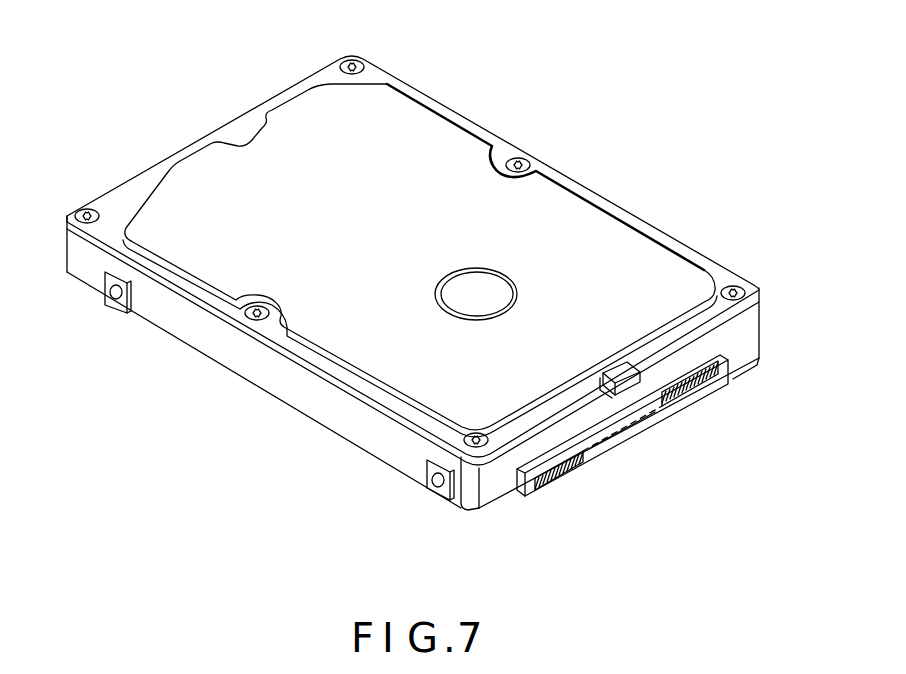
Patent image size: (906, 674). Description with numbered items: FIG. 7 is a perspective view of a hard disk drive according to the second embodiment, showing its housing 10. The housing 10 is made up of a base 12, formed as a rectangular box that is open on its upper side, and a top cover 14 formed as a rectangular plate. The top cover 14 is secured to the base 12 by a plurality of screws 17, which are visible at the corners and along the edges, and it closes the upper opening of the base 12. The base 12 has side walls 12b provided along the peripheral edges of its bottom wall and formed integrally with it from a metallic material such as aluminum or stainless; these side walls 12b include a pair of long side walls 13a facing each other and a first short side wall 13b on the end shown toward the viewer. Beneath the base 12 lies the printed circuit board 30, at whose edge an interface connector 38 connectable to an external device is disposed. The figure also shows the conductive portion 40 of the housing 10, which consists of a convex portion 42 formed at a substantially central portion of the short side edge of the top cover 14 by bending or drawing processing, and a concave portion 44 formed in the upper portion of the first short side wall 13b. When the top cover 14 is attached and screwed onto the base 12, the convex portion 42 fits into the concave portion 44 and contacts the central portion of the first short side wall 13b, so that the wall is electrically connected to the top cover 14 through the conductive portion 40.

The housing 10 is at (437, 88).
The base 12 is at (275, 371).
The side walls 12b is at (180, 315).
The long side walls 13a is at (355, 427).
The first short side wall 13b is at (532, 447).
The top cover 14 is at (582, 225).
The screws 17 is at (350, 56).
The printed circuit board 30 is at (753, 365).
The interface connector 38 is at (697, 398).
The conductive portion 40 is at (638, 383).
The convex portion 42 is at (627, 383).
The concave portion 44 is at (623, 395).